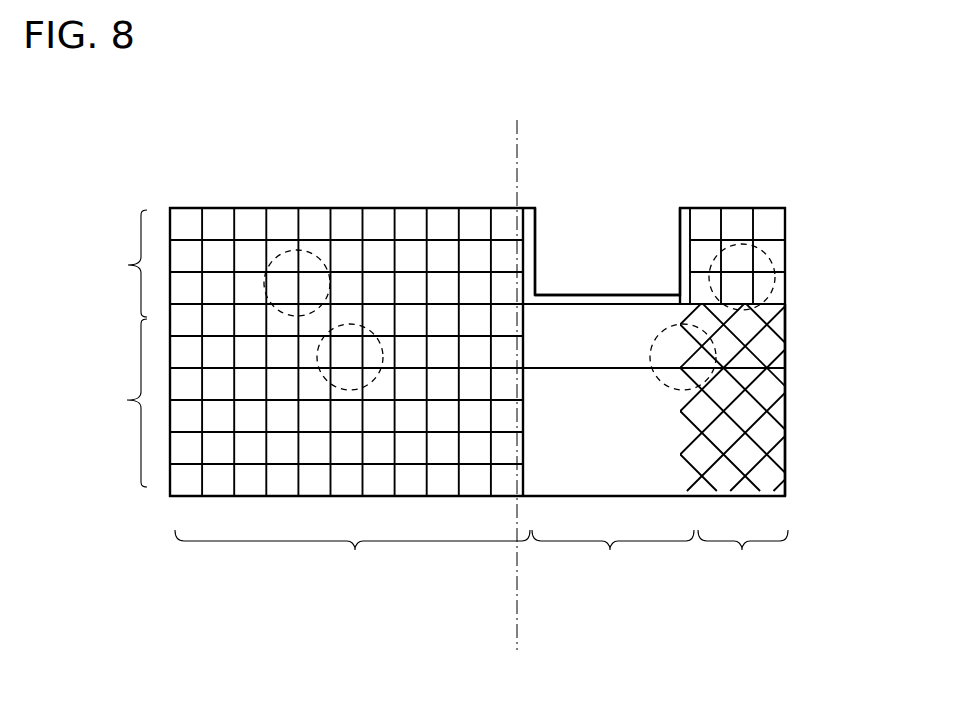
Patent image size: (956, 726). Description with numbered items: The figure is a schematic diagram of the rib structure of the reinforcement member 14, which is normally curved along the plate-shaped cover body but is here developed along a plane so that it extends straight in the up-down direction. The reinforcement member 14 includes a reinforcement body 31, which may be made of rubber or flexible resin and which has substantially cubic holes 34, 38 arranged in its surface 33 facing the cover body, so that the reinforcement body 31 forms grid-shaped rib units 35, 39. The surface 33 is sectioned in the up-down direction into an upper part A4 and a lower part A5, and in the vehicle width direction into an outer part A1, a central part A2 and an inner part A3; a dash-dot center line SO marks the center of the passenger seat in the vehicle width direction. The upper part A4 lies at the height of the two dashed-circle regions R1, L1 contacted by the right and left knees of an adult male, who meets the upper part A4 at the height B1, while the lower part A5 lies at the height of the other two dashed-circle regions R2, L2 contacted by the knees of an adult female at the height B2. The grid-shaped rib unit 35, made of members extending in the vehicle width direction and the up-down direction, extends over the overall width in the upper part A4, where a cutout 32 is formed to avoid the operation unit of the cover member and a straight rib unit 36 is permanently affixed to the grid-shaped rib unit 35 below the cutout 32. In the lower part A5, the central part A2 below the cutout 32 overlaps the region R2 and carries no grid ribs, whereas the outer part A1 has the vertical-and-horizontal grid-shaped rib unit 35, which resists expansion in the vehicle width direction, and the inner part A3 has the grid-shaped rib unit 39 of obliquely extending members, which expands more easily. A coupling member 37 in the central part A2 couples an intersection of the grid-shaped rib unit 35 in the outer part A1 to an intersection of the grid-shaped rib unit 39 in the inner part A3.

The reinforcement member 14 is at (483, 163).
The reinforcement body 31 is at (375, 208).
The cutout 32 is at (611, 239).
The surface 33 is at (405, 415).
The hole 34 is at (183, 465).
The grid-shaped rib unit 35 is at (255, 428).
The straight rib unit 36 is at (572, 295).
The coupling member 37 is at (600, 368).
The hole 38 is at (720, 475).
The grid-shaped rib unit 39 is at (755, 428).
The region L1 is at (296, 250).
The region L2 is at (352, 324).
The region R1 is at (742, 245).
The region R2 is at (681, 324).
The center line SO is at (517, 370).
The outer part A1 is at (352, 559).
The central part A2 is at (613, 560).
The inner part A3 is at (743, 559).
The upper part A4 is at (110, 263).
The lower part A5 is at (106, 403).
The height B1 is at (140, 275).
The height B2 is at (140, 358).